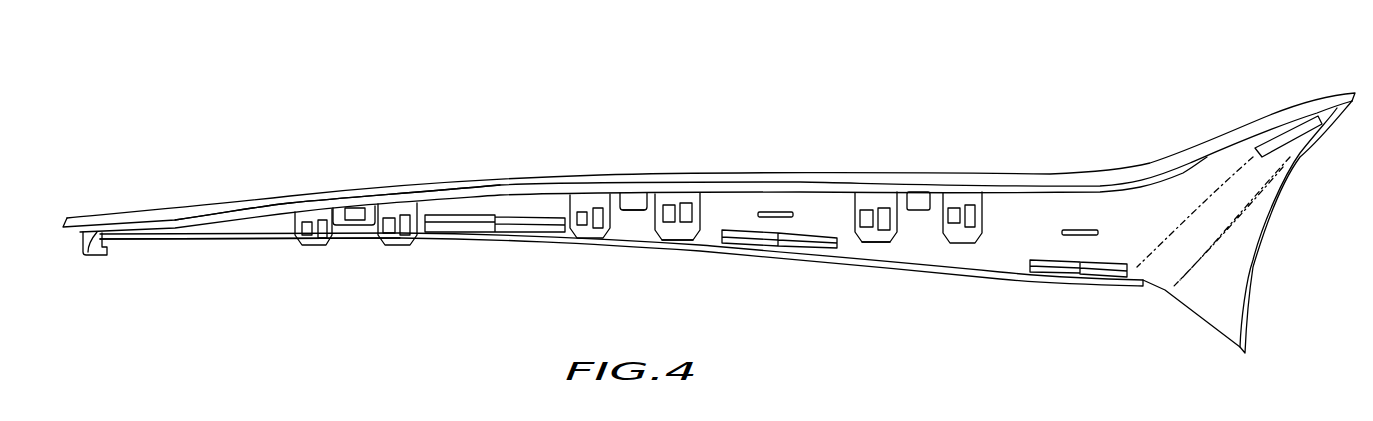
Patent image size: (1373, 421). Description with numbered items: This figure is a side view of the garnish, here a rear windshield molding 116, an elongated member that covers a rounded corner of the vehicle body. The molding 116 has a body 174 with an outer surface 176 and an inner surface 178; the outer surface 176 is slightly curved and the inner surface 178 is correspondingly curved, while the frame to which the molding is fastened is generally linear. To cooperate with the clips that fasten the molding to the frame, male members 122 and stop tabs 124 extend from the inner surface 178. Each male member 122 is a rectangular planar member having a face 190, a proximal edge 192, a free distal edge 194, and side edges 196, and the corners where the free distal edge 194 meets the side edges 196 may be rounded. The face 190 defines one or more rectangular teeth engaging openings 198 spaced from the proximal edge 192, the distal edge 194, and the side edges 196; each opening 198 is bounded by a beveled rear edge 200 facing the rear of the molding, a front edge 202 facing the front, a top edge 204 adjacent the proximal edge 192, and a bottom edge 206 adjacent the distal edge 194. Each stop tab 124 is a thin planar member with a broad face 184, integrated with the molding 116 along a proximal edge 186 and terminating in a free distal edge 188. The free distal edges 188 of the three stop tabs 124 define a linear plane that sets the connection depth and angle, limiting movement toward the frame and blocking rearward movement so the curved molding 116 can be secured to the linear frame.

The molding 116 is at (178, 143).
The male member 122 is at (298, 262).
The stop tab 124 is at (357, 222).
The body 174 is at (79, 196).
The outer surface 176 is at (273, 193).
The inner surface 178 is at (200, 240).
The broad face 184 is at (633, 197).
The proximal edge 186 is at (636, 193).
The free distal edge 188 is at (655, 217).
The face 190 is at (862, 202).
The proximal edge 192 is at (880, 192).
The free distal edge 194 is at (877, 242).
The side edges 196 is at (853, 215).
The teeth engaging openings 198 is at (970, 203).
The beveled rear edge 200 is at (700, 214).
The front edge 202 is at (636, 210).
The top edge 204 is at (686, 197).
The bottom edge 206 is at (680, 238).